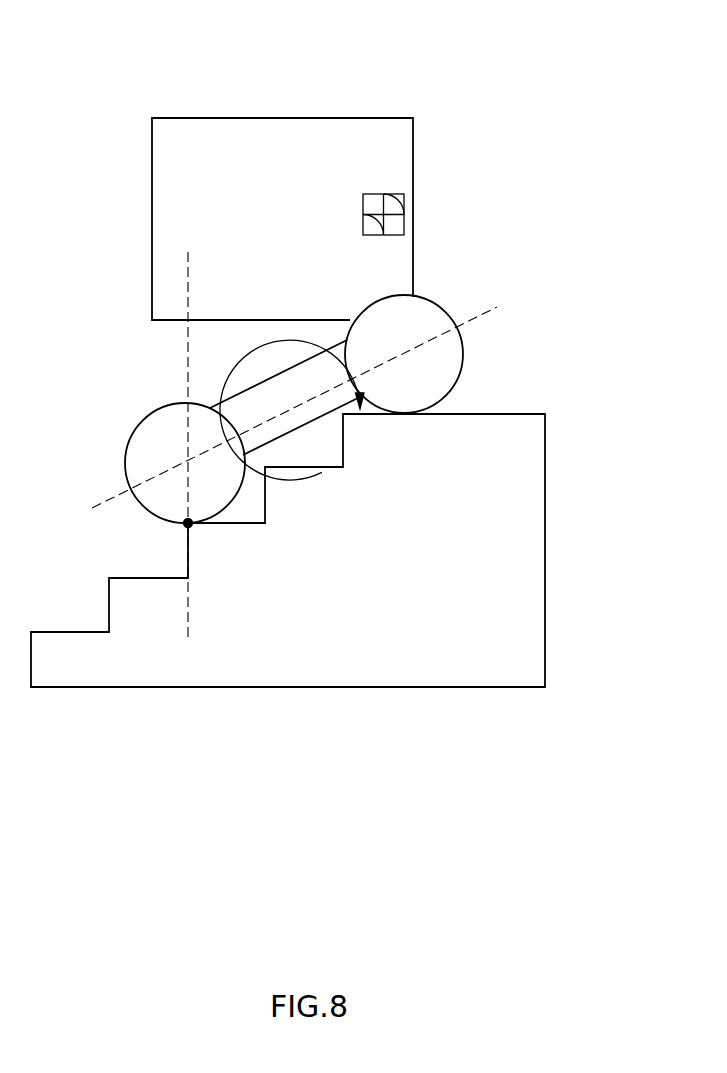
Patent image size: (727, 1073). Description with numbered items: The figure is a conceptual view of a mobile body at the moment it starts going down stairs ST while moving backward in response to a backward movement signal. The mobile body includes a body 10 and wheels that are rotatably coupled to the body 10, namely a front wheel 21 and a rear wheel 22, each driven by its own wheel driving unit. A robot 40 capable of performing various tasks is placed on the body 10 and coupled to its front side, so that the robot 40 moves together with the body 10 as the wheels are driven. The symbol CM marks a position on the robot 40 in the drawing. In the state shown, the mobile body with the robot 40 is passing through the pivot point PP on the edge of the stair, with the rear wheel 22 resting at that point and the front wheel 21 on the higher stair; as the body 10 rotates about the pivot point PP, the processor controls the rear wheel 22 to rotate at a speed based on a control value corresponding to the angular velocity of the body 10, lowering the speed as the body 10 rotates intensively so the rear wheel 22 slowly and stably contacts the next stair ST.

The body 10 is at (253, 387).
The front wheel 21 is at (437, 302).
The rear wheel 22 is at (147, 417).
The robot 40 is at (283, 118).
The camera CM is at (404, 199).
The stairs ST is at (545, 517).
The pivot point PP is at (188, 528).